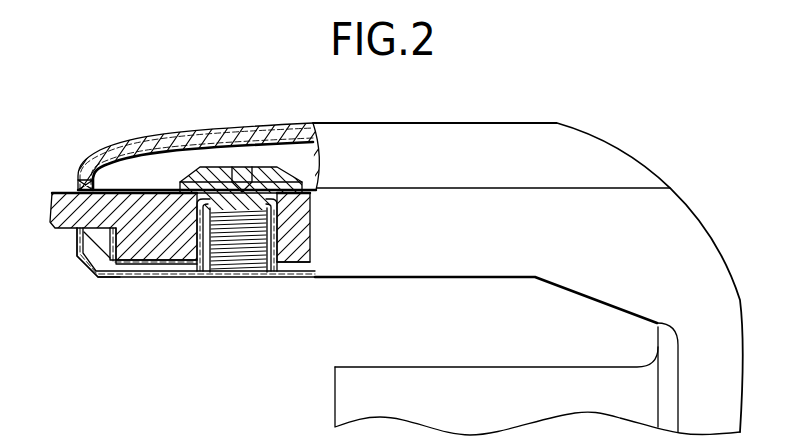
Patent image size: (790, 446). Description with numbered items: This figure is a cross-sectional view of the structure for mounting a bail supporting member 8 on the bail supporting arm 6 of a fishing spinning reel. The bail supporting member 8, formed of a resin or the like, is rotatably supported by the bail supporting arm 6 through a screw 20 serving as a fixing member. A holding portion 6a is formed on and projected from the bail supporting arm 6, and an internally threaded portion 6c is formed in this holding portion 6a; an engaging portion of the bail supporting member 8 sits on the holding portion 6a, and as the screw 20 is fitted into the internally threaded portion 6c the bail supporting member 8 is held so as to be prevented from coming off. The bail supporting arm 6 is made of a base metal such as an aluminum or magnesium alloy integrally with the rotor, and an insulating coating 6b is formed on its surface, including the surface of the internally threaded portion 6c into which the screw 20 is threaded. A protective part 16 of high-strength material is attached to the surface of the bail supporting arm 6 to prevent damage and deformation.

The bail supporting arm 6 is at (145, 277).
The holding portion 6a is at (280, 267).
The insulating coating 6b is at (86, 270).
The internally threaded portion 6c is at (222, 258).
The bail supporting member 8 is at (150, 190).
The protective part 16 is at (281, 135).
The screw 20 is at (217, 170).